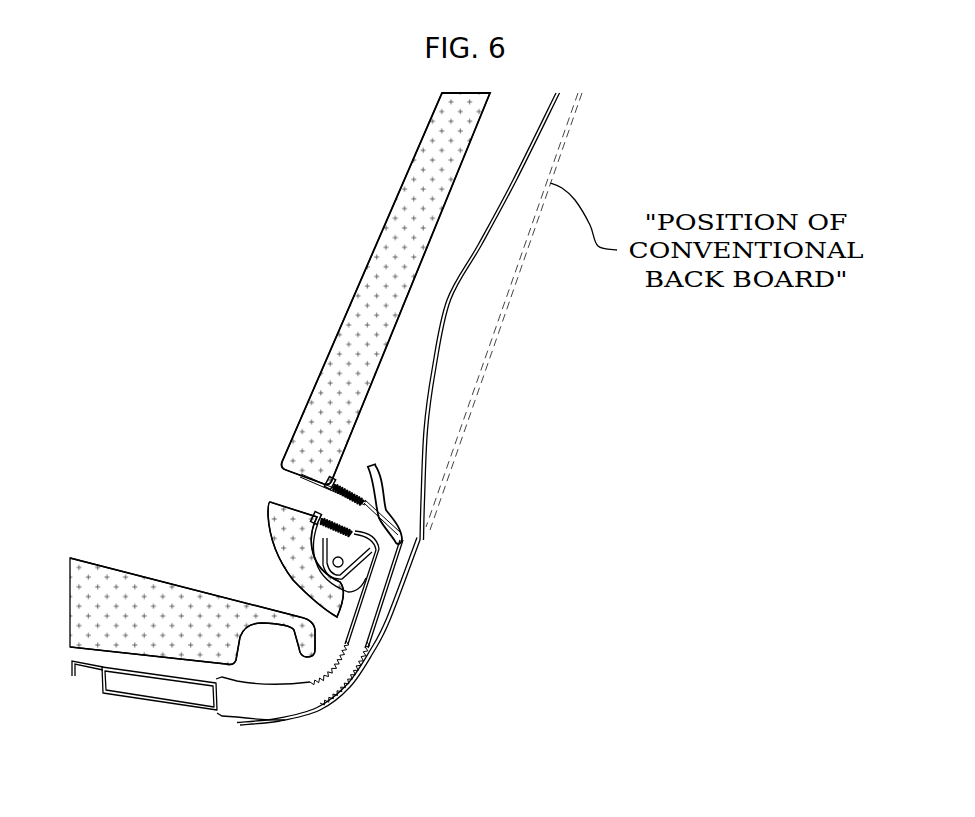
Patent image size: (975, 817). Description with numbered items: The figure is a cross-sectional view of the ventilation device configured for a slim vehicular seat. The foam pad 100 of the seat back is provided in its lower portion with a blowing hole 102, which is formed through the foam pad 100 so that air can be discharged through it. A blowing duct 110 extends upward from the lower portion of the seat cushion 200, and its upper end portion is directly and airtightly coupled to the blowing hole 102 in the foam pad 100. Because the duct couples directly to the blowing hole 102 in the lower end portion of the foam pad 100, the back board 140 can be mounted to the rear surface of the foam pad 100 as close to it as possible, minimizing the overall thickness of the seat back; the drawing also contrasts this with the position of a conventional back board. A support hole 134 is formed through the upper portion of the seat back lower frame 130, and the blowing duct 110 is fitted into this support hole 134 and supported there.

The foam pad 100 is at (392, 191).
The blowing hole 102 is at (293, 488).
The blowing duct 110 is at (385, 581).
The seat back lower frame 130 is at (355, 567).
The support hole 134 is at (398, 538).
The back board 140 is at (448, 308).
The seat cushion 200 is at (150, 594).